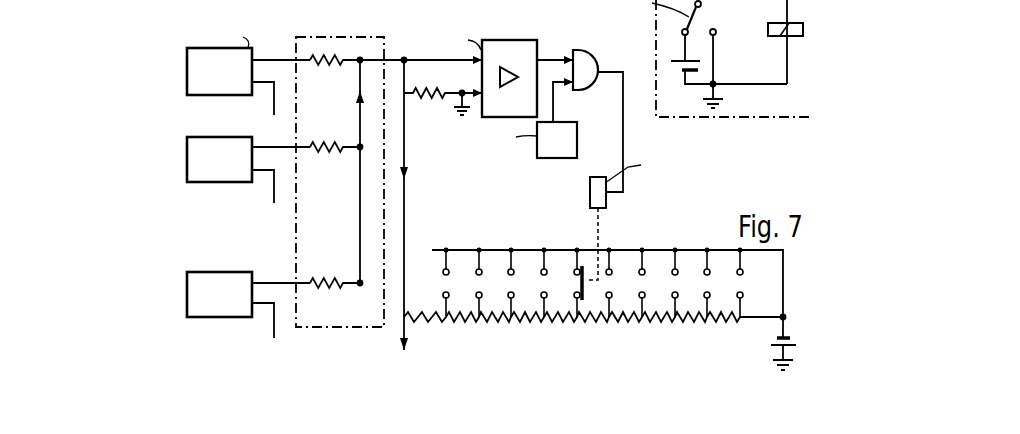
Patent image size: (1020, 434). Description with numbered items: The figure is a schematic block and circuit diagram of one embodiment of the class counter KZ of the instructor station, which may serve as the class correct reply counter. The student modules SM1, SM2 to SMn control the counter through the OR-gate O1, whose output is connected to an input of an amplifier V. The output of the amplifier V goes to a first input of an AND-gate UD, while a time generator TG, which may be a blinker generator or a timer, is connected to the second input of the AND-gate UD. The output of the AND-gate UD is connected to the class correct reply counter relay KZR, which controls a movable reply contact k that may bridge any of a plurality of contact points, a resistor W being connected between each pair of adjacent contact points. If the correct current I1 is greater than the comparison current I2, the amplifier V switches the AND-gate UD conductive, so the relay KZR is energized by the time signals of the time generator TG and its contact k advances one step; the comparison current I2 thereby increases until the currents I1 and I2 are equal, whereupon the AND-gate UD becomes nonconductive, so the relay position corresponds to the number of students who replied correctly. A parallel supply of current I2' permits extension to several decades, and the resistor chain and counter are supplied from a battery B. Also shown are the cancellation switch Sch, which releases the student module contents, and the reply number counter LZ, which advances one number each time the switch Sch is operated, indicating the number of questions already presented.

The student module SM1 is at (248, 61).
The student module SM2 is at (248, 170).
The student module SMn is at (248, 305).
The OR-gate O1 is at (334, 237).
The correct current I1 is at (356, 97).
The amplifier V is at (518, 42).
The AND-gate UD is at (593, 66).
The time generator TG is at (524, 119).
The class correct reply counter relay KZR is at (590, 192).
The relay contact k is at (585, 271).
The class counter KZ is at (652, 220).
The resistor W is at (527, 322).
The comparison current I2 is at (416, 176).
The comparison current I2' is at (416, 348).
The battery B is at (796, 341).
The cancellation switch Sch is at (699, 16).
The reply number counter LZ is at (797, 23).